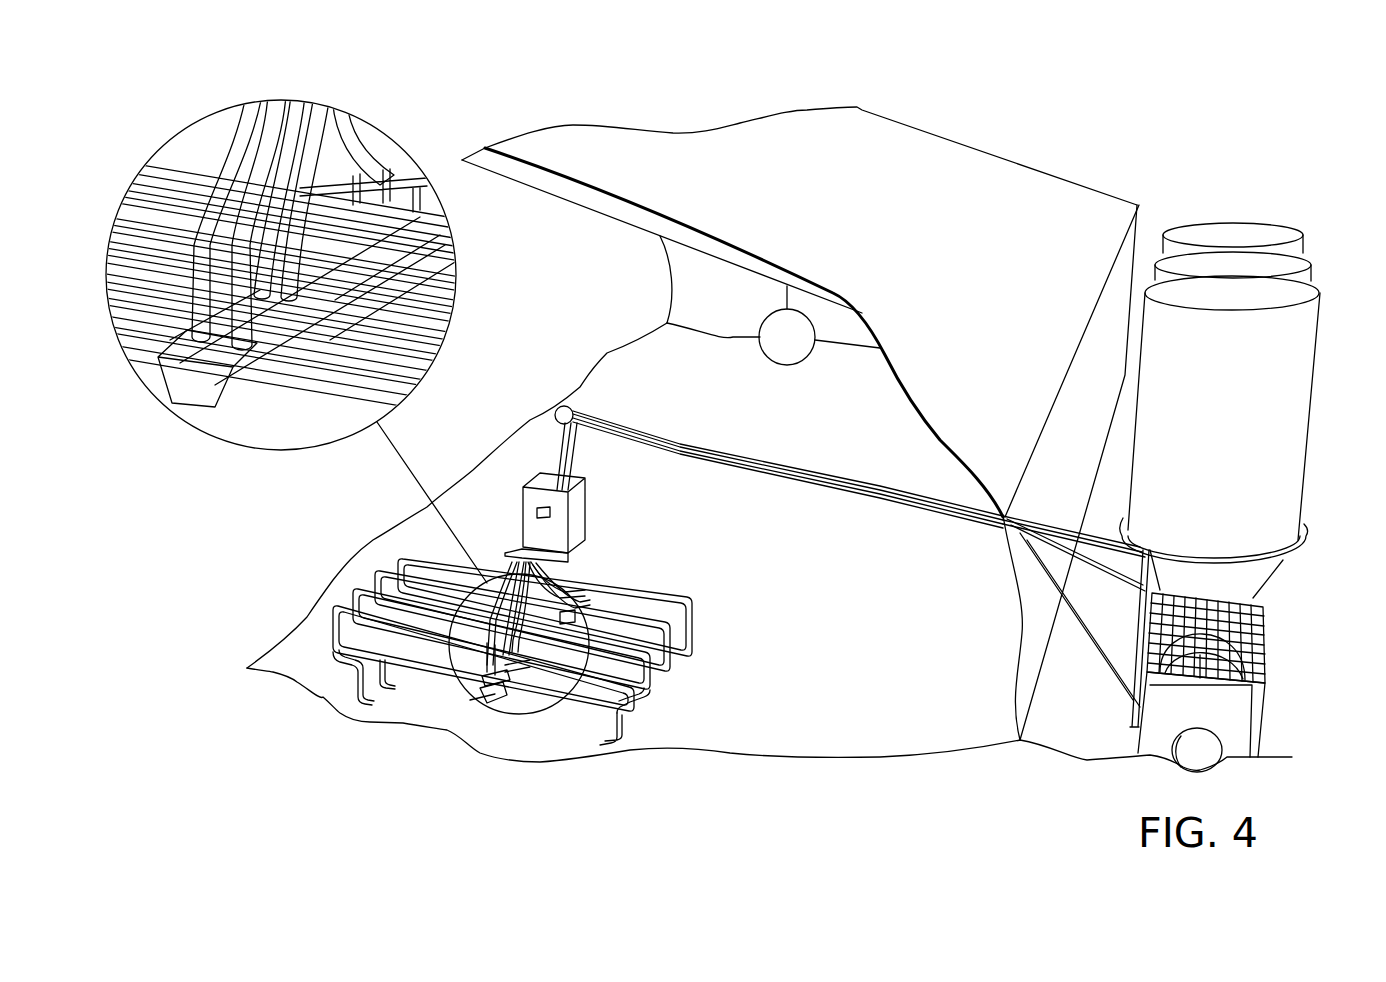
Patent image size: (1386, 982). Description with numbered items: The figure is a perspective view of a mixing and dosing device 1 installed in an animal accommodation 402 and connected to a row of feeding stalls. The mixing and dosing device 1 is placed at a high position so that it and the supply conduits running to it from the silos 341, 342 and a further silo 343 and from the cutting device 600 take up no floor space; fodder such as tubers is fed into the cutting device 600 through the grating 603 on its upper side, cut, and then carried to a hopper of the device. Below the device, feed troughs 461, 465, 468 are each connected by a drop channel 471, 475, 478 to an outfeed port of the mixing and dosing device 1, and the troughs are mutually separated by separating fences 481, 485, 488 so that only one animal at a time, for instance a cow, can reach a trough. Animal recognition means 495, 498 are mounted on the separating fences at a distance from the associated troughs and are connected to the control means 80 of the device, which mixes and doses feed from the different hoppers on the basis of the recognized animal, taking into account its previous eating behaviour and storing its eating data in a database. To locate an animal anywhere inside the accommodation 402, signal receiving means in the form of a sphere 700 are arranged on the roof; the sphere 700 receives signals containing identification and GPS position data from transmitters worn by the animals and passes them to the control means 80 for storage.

The mixing and dosing device 1 is at (575, 515).
The control means 80 is at (541, 507).
The silo 341 is at (1297, 294).
The silo 342 is at (1262, 262).
The upper tank 343 is at (1228, 235).
The animal accommodation 402 is at (993, 170).
The feed trough 461 is at (460, 678).
The feed trough 465 is at (493, 710).
The feed trough 468 is at (587, 587).
The drop channel 471 is at (487, 573).
The drop channel 475 is at (523, 683).
The drop channel 478 is at (530, 562).
The separating fence 481 is at (343, 688).
The separating fence 485 is at (630, 748).
The separating fence 488 is at (693, 602).
The animal recognition means 495 is at (662, 706).
The animal recognition means 498 is at (700, 655).
The cutting device 600 is at (1233, 711).
The grating 603 is at (1243, 643).
The sphere 700 is at (790, 335).